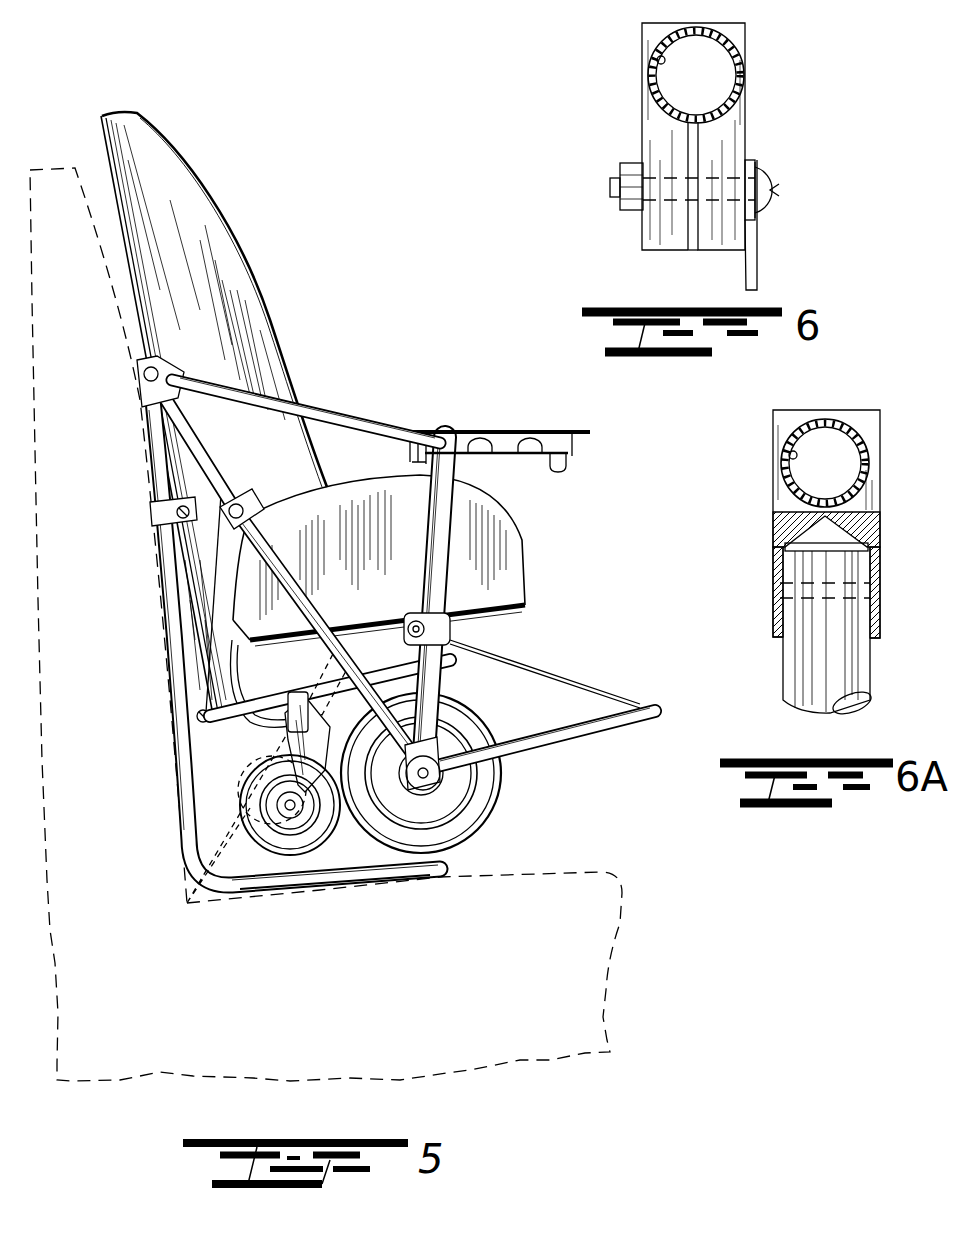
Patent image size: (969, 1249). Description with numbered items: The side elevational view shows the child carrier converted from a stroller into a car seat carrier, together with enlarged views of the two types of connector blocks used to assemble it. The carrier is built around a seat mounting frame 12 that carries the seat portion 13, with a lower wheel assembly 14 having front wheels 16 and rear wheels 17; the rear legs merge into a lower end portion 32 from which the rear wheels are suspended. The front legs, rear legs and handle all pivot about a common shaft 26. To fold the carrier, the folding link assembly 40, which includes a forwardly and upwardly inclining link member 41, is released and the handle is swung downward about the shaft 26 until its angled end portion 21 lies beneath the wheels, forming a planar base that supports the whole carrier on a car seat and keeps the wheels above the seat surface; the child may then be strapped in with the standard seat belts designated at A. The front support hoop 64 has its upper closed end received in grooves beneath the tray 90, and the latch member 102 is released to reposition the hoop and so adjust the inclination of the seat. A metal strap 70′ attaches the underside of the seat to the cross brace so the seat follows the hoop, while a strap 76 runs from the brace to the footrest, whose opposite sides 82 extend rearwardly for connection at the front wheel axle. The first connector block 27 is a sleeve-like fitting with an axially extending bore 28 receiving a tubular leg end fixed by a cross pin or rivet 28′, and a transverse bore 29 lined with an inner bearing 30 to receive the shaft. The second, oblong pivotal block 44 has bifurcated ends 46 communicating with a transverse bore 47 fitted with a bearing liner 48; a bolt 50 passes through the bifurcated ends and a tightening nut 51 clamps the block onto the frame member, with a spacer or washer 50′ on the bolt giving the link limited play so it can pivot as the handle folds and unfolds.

In FIG. 5, the seat portion 13 is at (231, 224).
In FIG. 5, the seat mounting frame 12 is at (311, 401).
In FIG. 5, the shaft 26 is at (146, 374).
In FIG. 5, the pivotal block 44 is at (150, 513).
In FIG. 6, the pivotal block 44 is at (641, 127).
In FIG. 5, the tray 90 is at (452, 432).
In FIG. 5, the latch member 102 is at (560, 470).
In FIG. 5, the front support hoop 64 is at (461, 512).
In FIG. 5, the metal strap 70′ is at (441, 621).
In FIG. 5, the strap 76 is at (505, 660).
In FIG. 5, the standard seat belts A is at (347, 656).
In FIG. 5, the lower end portion 32 is at (455, 667).
In FIG. 5, the folding link assembly 40 is at (196, 717).
In FIG. 5, the lower wheel assembly 14 is at (247, 733).
In FIG. 5, the opposite sides of footrest 82 is at (573, 740).
In FIG. 5, the front wheels 16 is at (497, 806).
In FIG. 5, the rear wheels 17 is at (303, 860).
In FIG. 5, the angled end portion 21 is at (398, 878).
In FIG. 6, the bearing liner 48 is at (658, 59).
In FIG. 6, the transverse bore 47 is at (655, 85).
In FIG. 6, the tightening nut 51 is at (616, 180).
In FIG. 6, the bolt 50 is at (777, 198).
In FIG. 6, the spacer or washer 50′ is at (760, 165).
In FIG. 6, the bifurcated ends 46 is at (641, 236).
In FIG. 6, the link member 41 is at (758, 266).
In FIG. 6A, the inner lining or bearing 30 is at (790, 455).
In FIG. 6A, the transverse bore 29 is at (782, 475).
In FIG. 6A, the connector block 27 is at (773, 505).
In FIG. 6A, the axially extending bore 28 is at (784, 634).
In FIG. 6A, the cross pin or rivet 28′ is at (800, 600).